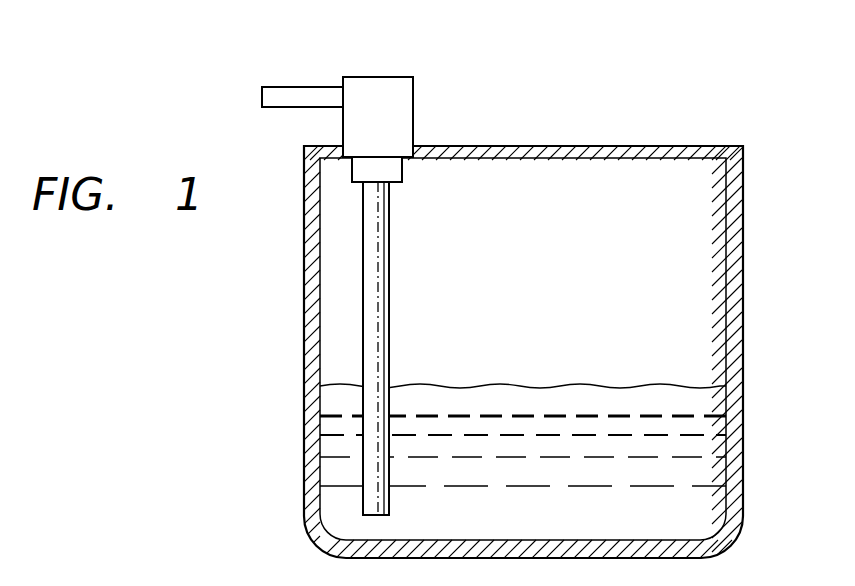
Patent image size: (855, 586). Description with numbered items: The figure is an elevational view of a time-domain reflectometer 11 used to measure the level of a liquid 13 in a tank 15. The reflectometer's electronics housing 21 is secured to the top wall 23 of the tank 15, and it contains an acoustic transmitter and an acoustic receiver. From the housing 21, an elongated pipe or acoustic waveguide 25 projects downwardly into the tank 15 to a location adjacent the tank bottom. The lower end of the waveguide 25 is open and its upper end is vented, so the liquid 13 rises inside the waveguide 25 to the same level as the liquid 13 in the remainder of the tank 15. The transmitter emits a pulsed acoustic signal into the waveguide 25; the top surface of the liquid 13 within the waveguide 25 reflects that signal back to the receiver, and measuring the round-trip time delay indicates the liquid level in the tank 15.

The time-domain reflectometer 11 is at (395, 261).
The liquid 13 is at (614, 405).
The tank 15 is at (743, 242).
The electronics housing 21 is at (380, 97).
The top wall 23 is at (605, 146).
The acoustic waveguide 25 is at (380, 292).